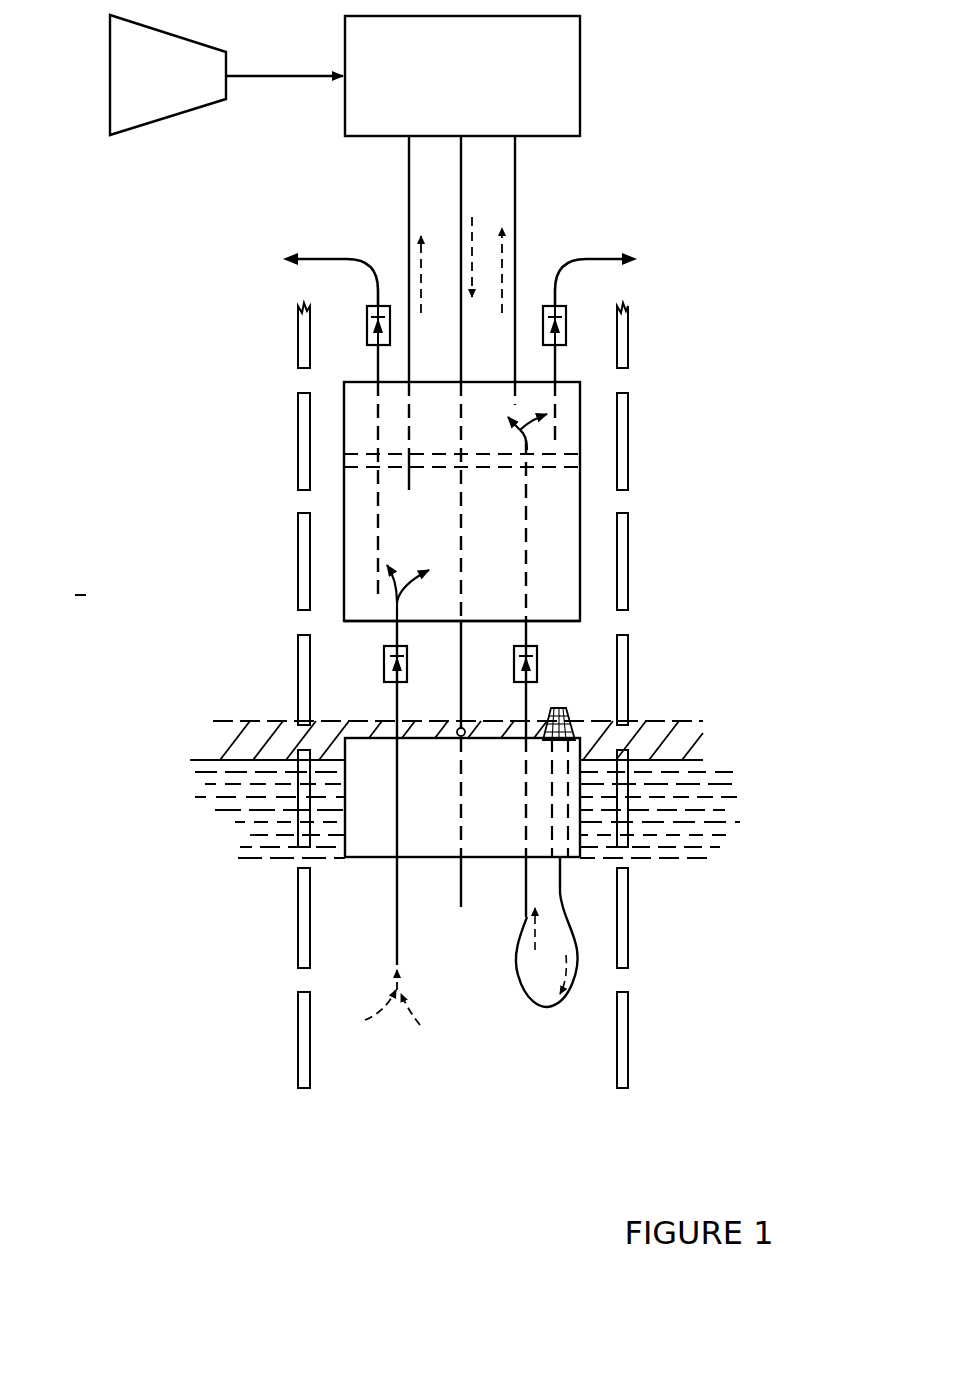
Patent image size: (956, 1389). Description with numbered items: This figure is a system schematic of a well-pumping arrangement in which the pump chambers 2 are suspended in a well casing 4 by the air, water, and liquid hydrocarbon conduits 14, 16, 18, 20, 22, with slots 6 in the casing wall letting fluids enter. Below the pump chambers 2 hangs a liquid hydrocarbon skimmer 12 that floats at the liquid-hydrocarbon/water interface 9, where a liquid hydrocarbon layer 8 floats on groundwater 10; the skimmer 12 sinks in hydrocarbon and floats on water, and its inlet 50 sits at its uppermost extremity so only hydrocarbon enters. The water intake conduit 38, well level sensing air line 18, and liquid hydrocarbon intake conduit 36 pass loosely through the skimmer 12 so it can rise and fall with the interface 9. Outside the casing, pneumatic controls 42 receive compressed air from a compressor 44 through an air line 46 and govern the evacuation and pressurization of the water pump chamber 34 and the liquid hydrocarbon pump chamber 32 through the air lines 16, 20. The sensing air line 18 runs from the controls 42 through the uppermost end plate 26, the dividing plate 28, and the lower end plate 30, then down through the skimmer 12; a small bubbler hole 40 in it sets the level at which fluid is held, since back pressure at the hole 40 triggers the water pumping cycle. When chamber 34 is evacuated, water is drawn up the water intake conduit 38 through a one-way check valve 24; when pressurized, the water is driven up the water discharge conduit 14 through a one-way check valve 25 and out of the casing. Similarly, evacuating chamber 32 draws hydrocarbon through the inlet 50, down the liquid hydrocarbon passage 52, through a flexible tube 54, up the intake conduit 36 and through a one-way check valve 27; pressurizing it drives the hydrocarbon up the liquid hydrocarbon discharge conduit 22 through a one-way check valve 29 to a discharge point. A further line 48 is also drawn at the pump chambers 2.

The pump chambers 2 is at (343, 453).
The well casing 4 is at (296, 347).
The slots 6 is at (296, 500).
The liquid hydrocarbon layer 8 is at (226, 742).
The liquid-hydrocarbon/water interface 9 is at (194, 760).
The groundwater 10 is at (219, 812).
The liquid hydrocarbon skimmer 12 is at (377, 842).
The water discharge conduit 14 is at (350, 255).
The water pump chamber air line 16 is at (413, 360).
The well level sensing air line 18 is at (464, 360).
The liquid hydrocarbon pump chamber air line 20 is at (519, 241).
The liquid hydrocarbon discharge conduit 22 is at (577, 256).
The one-way check valve 24 is at (383, 680).
The one-way check valve 25 is at (366, 311).
The uppermost end plate 26 is at (366, 374).
The one-way check valve 27 is at (539, 679).
The dividing plate 28 is at (579, 462).
The one-way check valve 29 is at (568, 313).
The lower end plate 30 is at (563, 625).
The liquid hydrocarbon pump chamber 32 is at (483, 428).
The water pump chamber 34 is at (410, 569).
The liquid hydrocarbon intake conduit 36 is at (531, 580).
The water intake conduit 38 is at (402, 636).
The bubbler hole 40 is at (465, 727).
The pneumatic controls 42 is at (462, 76).
The compressor 44 is at (168, 75).
The air line 46 is at (284, 62).
The return conduit 48 is at (583, 403).
The inlet 50 is at (569, 718).
The liquid hydrocarbon passage 52 is at (568, 836).
The flexible tube 54 is at (583, 951).